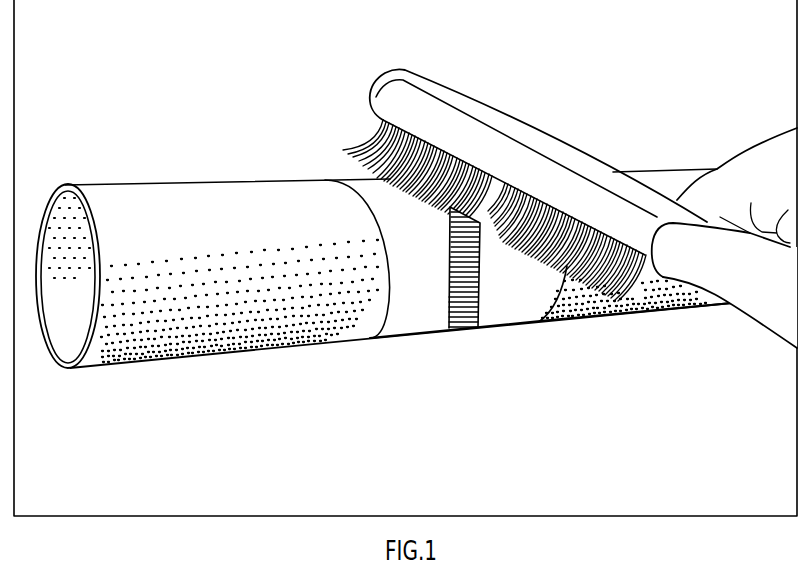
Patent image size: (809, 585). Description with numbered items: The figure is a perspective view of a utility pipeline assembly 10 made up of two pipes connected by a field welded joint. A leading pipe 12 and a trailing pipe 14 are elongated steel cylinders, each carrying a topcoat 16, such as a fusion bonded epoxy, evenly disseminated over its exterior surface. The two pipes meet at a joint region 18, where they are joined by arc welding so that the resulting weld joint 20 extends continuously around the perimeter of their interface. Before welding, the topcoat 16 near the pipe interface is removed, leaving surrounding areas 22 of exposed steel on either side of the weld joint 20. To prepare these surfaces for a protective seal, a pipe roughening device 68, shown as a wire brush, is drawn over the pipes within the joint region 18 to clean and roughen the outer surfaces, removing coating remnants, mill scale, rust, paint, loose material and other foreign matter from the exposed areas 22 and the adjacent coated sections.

The utility pipeline assembly 10 is at (298, 80).
The leading pipe 12 is at (205, 355).
The trailing pipe 14 is at (622, 315).
The topcoat 16 is at (328, 317).
The joint region 18 is at (468, 382).
The weld joint 20 is at (462, 323).
The surrounding areas 22 is at (405, 297).
The pipe roughening device 68 is at (553, 147).